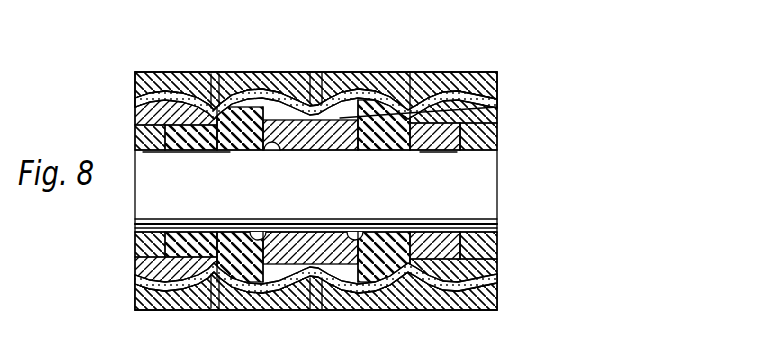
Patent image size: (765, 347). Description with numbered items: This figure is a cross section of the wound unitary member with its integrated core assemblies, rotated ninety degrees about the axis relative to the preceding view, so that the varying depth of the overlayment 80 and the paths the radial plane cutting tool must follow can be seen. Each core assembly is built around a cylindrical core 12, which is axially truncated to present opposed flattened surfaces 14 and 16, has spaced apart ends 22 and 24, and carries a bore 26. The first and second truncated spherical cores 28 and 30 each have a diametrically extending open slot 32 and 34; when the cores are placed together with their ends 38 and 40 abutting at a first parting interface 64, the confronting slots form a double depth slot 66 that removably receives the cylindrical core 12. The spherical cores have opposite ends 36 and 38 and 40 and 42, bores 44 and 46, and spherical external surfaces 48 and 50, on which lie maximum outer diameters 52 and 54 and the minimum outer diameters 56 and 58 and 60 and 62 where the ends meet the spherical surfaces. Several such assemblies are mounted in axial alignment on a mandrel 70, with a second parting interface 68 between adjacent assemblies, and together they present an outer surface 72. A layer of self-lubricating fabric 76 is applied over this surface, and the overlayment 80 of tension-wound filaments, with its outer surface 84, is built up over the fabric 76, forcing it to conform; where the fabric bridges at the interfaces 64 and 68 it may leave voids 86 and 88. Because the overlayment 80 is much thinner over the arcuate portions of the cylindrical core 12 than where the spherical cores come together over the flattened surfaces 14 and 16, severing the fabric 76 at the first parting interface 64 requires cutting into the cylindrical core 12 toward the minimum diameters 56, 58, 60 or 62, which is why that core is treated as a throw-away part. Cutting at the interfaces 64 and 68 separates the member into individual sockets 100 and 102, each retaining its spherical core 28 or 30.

The cylindrical core 12 is at (318, 152).
The flattened surface 14 is at (290, 108).
The flattened surface 16 is at (266, 296).
The end of cylindrical core 22 is at (252, 236).
The end of cylindrical core 24 is at (397, 234).
The bore 26 is at (345, 152).
The first truncated spherical core 28 is at (247, 88).
The second truncated spherical core 30 is at (390, 107).
The open slot 32 is at (272, 148).
The open slot 34 is at (357, 234).
The end of first spherical core 36 is at (143, 118).
The end of first spherical core 38 is at (330, 300).
The end of second spherical core 40 is at (318, 240).
The end of second spherical core 42 is at (497, 107).
The bore 44 is at (230, 153).
The bore 46 is at (400, 153).
The spherical external surface 48 is at (226, 290).
The spherical external surface 50 is at (385, 290).
The maximum outer diameter 52 is at (262, 95).
The maximum outer diameter 54 is at (352, 108).
The minimum outer diameter 56 is at (213, 96).
The minimum outer diameter 58 is at (317, 106).
The minimum outer diameter 60 is at (335, 103).
The minimum outer diameter 62 is at (412, 73).
The first parting interface 64 is at (297, 151).
The double depth slot 66 is at (357, 153).
The second parting interface 68 is at (227, 230).
The mandrel 70 is at (483, 194).
The core assembly outer surface 72 is at (244, 290).
The self-lubricating fabric 76 is at (133, 277).
The overlayment 80 is at (143, 82).
The outer surface of overlayment 84 is at (143, 70).
The void 86 is at (355, 300).
The void 88 is at (143, 212).
The individual socket 100 is at (230, 312).
The individual socket 102 is at (407, 311).